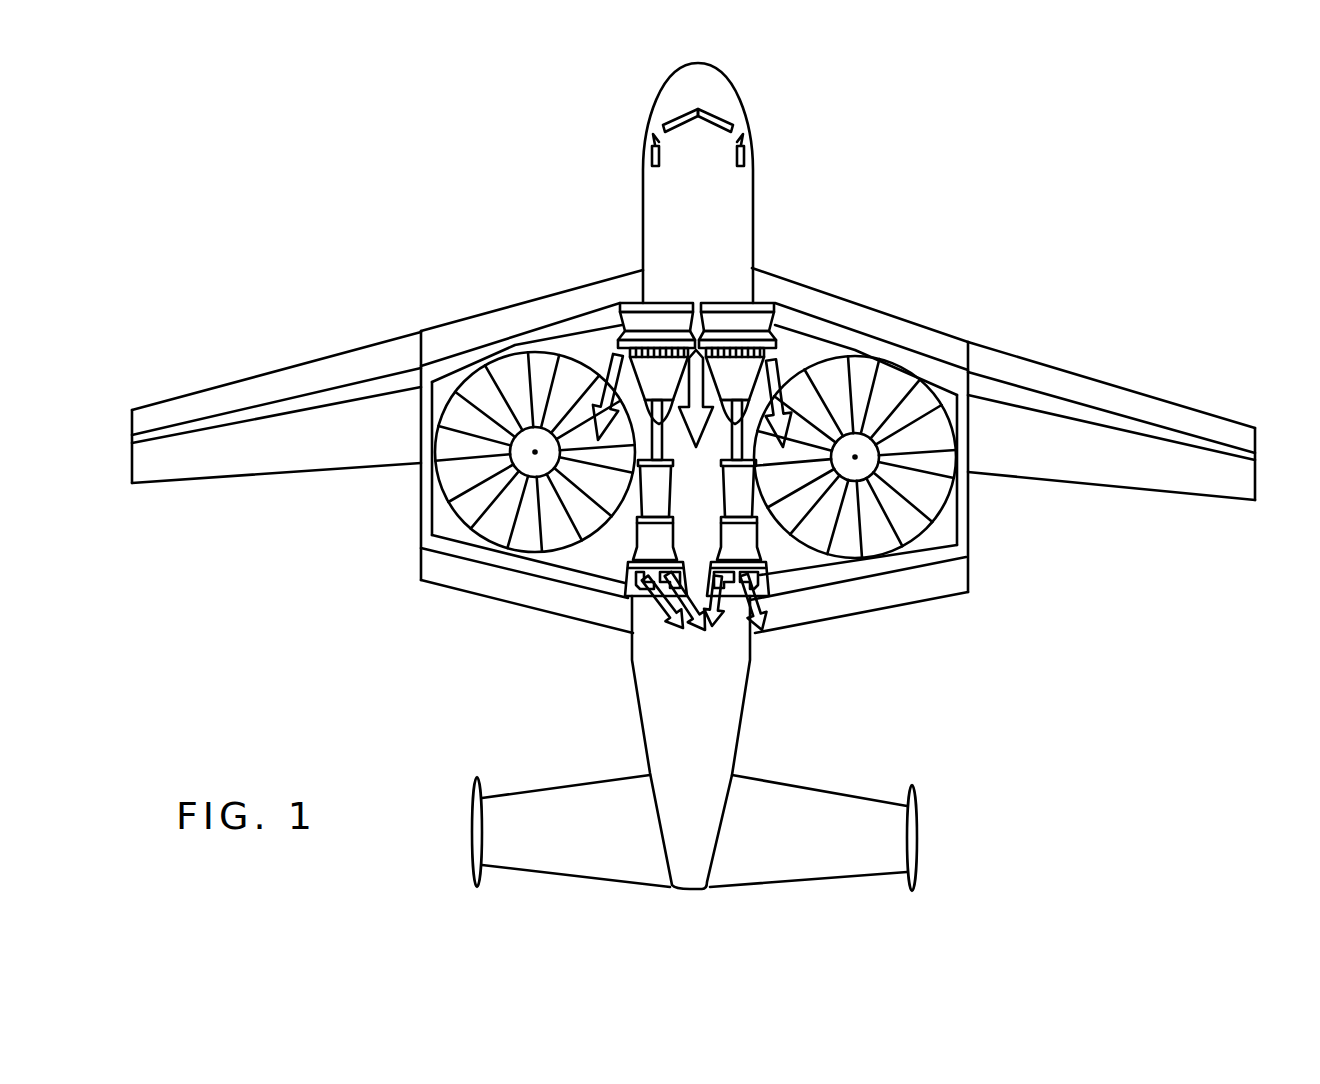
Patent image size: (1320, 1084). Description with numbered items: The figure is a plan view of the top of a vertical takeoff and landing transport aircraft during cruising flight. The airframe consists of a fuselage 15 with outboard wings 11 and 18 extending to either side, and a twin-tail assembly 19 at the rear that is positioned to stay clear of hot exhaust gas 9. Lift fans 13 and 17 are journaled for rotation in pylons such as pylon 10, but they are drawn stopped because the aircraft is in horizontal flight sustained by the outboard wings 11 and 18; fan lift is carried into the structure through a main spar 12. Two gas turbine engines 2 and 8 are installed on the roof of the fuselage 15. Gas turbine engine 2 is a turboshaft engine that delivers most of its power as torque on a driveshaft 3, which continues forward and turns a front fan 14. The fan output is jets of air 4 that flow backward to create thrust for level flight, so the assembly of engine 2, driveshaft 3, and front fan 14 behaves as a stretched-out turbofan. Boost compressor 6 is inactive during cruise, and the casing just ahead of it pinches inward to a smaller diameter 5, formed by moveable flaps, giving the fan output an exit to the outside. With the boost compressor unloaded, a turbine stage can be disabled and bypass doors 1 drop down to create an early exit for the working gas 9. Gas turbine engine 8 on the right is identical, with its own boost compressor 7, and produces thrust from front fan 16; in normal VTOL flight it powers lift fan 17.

The bypass doors 1 is at (647, 578).
The gas turbine engine 2 is at (635, 531).
The driveshaft 3 is at (650, 452).
The jets of air 4 is at (602, 389).
The inward pinch 5 is at (632, 349).
The boost compressor 6 is at (659, 390).
The boost compressor 7 is at (735, 390).
The gas turbine engine 8 is at (757, 531).
The hot exhaust gas 9 is at (704, 617).
The pylon 10 is at (421, 558).
The outboard wing 11 is at (300, 355).
The main spar 12 is at (466, 358).
The lift fan 13 is at (537, 365).
The front fan 14 is at (622, 300).
The fuselage 15 is at (753, 205).
The front fan 16 is at (762, 302).
The lift fan 17 is at (865, 370).
The outboard wing 18 is at (1077, 370).
The twin-tail assembly 19 is at (886, 771).